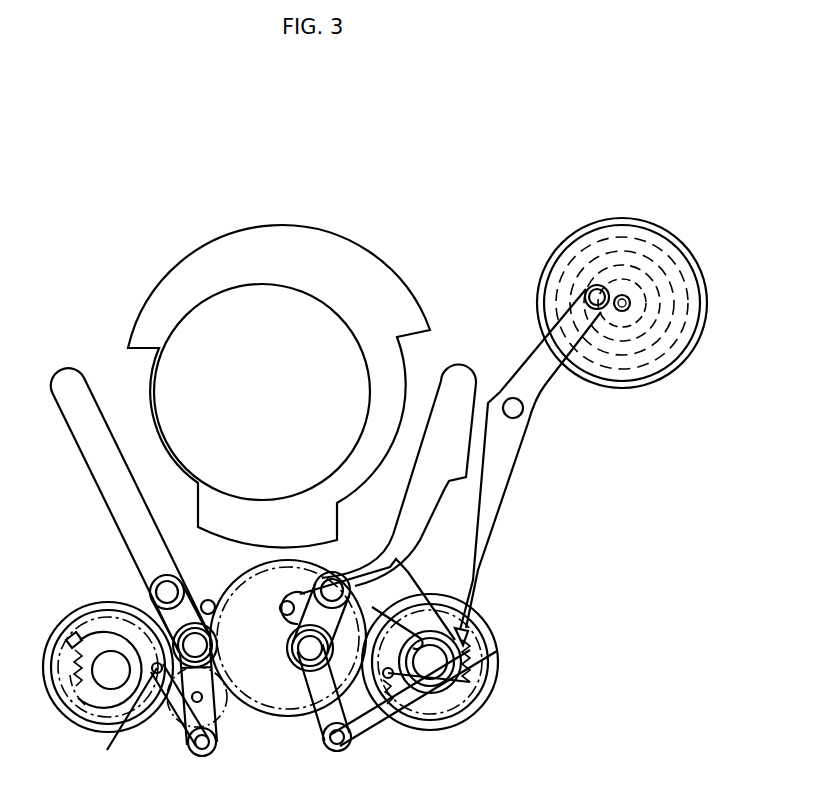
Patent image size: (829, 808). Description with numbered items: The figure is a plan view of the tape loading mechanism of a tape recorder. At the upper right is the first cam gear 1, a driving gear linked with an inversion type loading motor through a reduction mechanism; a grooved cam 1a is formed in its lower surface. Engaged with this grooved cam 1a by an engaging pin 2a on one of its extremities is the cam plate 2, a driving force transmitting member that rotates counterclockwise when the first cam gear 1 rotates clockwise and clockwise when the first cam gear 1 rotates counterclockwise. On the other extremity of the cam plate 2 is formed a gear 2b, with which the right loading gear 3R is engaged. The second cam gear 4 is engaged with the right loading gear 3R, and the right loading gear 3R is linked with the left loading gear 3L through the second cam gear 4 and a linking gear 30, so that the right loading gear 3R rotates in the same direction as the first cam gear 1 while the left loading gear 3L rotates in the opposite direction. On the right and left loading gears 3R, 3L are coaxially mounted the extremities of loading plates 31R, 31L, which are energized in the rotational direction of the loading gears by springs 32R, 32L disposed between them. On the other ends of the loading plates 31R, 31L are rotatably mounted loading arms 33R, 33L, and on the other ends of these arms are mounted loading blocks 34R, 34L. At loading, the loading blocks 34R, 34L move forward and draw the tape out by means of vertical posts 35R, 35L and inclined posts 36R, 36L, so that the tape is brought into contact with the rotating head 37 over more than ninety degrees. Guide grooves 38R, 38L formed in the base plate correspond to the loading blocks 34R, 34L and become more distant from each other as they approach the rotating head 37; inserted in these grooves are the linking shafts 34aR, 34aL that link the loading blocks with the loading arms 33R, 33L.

The first cam gear 1 is at (668, 345).
The grooved cam 1a is at (628, 338).
The cam plate 2 is at (503, 488).
The engaging pin 2a is at (585, 292).
The gear 2b is at (468, 595).
The left loading gear 3L is at (60, 625).
The right loading gear 3R is at (497, 660).
The second cam gear 4 is at (248, 713).
The linking gear 30 is at (225, 735).
The loading plate 31L is at (155, 730).
The loading plate 31R is at (362, 730).
The spring 32L is at (114, 697).
The spring 32R is at (467, 681).
The loading arm 33L is at (195, 752).
The loading arm 33R is at (326, 745).
The loading block 34L is at (178, 580).
The loading block 34R is at (300, 588).
The linking shaft 34aL is at (208, 636).
The linking shaft 34aR is at (305, 658).
The vertical post 35L is at (155, 585).
The vertical post 35R is at (353, 580).
The inclined post 36L is at (206, 598).
The inclined post 36R is at (280, 608).
The rotating head 37 is at (335, 325).
The guide groove 38L is at (85, 395).
The guide groove 38R is at (458, 385).